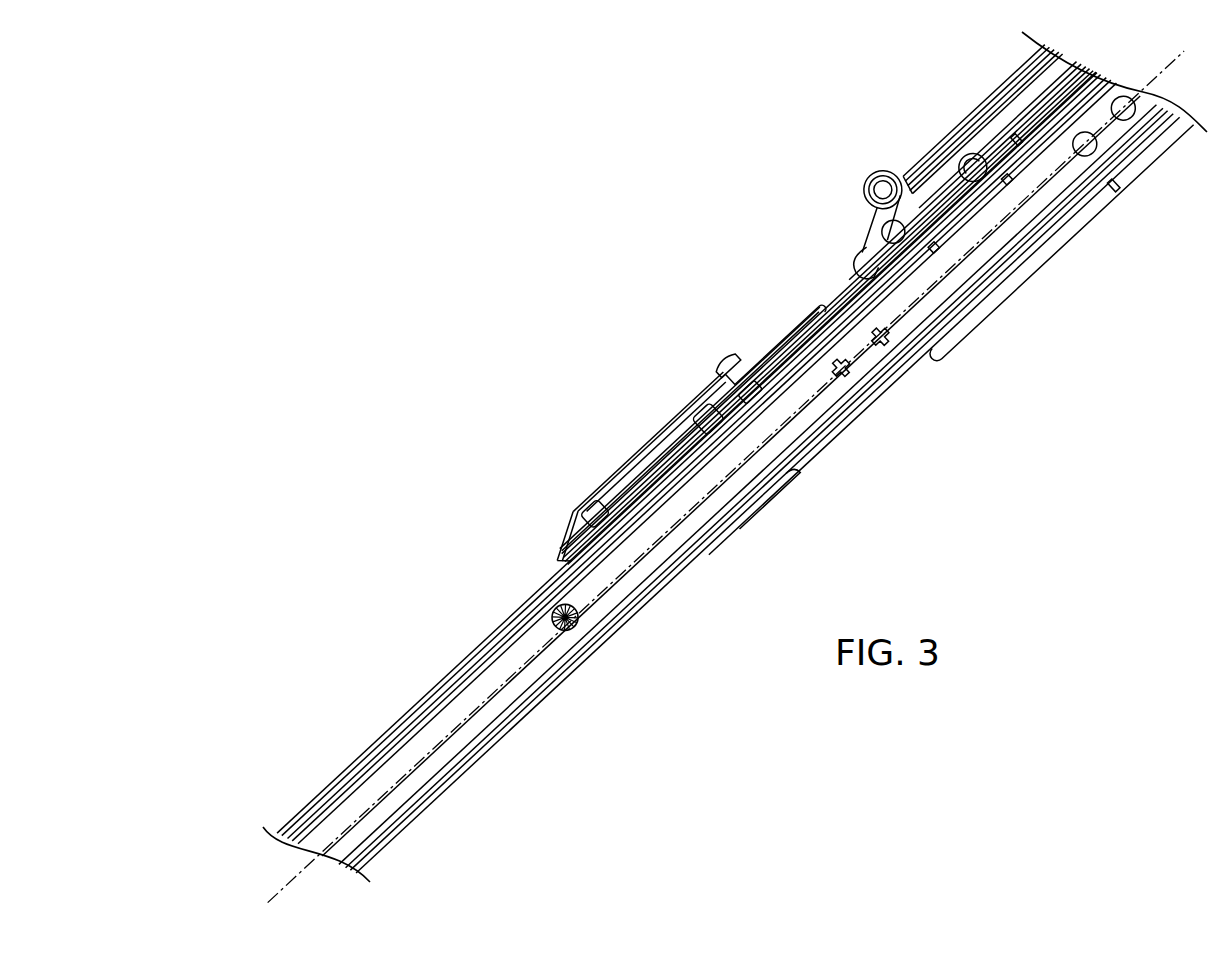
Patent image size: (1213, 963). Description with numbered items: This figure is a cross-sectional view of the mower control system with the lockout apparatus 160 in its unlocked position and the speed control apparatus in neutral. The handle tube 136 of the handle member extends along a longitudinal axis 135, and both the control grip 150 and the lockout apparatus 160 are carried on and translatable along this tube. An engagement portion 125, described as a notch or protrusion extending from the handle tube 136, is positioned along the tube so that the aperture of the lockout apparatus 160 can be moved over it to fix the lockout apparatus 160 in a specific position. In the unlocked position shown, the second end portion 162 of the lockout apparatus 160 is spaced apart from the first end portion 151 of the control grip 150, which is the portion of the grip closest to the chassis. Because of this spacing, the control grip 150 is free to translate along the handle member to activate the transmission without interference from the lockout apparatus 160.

The engagement portion 125 is at (707, 422).
The longitudinal axis 135 is at (285, 883).
The handle tube 136 is at (523, 615).
The control grip 150 is at (850, 220).
The first end portion 151 is at (856, 262).
The lockout apparatus 160 is at (618, 462).
The second end portion 162 is at (727, 358).